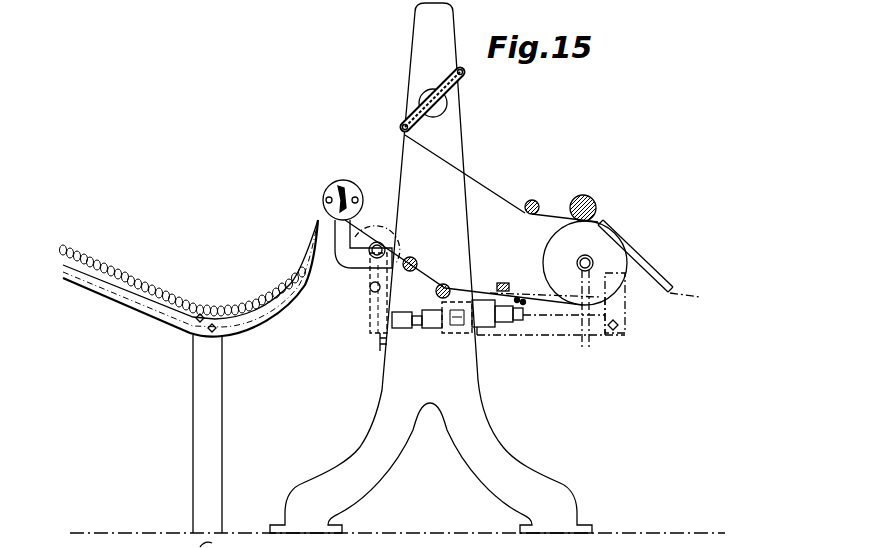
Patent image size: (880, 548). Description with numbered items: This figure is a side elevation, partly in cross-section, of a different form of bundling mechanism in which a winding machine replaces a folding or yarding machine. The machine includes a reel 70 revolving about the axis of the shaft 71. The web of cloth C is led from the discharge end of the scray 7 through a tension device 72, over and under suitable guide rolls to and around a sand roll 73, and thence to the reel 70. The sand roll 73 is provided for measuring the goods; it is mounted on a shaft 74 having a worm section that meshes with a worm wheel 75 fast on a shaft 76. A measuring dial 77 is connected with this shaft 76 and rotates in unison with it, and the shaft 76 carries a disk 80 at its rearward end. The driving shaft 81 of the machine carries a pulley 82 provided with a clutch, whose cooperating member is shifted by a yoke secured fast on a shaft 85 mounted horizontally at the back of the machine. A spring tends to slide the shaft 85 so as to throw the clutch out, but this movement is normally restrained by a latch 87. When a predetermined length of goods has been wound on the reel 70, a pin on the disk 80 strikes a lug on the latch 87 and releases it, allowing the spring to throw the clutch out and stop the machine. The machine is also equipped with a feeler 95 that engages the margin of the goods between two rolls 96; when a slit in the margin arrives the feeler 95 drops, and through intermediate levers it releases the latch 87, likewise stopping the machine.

The web of cloth C is at (237, 300).
The scray 7 is at (257, 323).
The reel 70 is at (438, 122).
The shaft 71 is at (412, 96).
The tension device 72 is at (321, 209).
The sand roll 73 is at (613, 255).
The shaft 74 is at (591, 249).
The worm wheel 75 is at (594, 351).
The shaft 76 is at (537, 317).
The measuring dial 77 is at (696, 304).
The disk 80 is at (397, 347).
The driving shaft 81 is at (403, 238).
The pulley 82 is at (387, 233).
The shaft 85 is at (367, 293).
The latch 87 is at (375, 347).
The feeler 95 is at (504, 283).
The rolls 96 is at (523, 304).